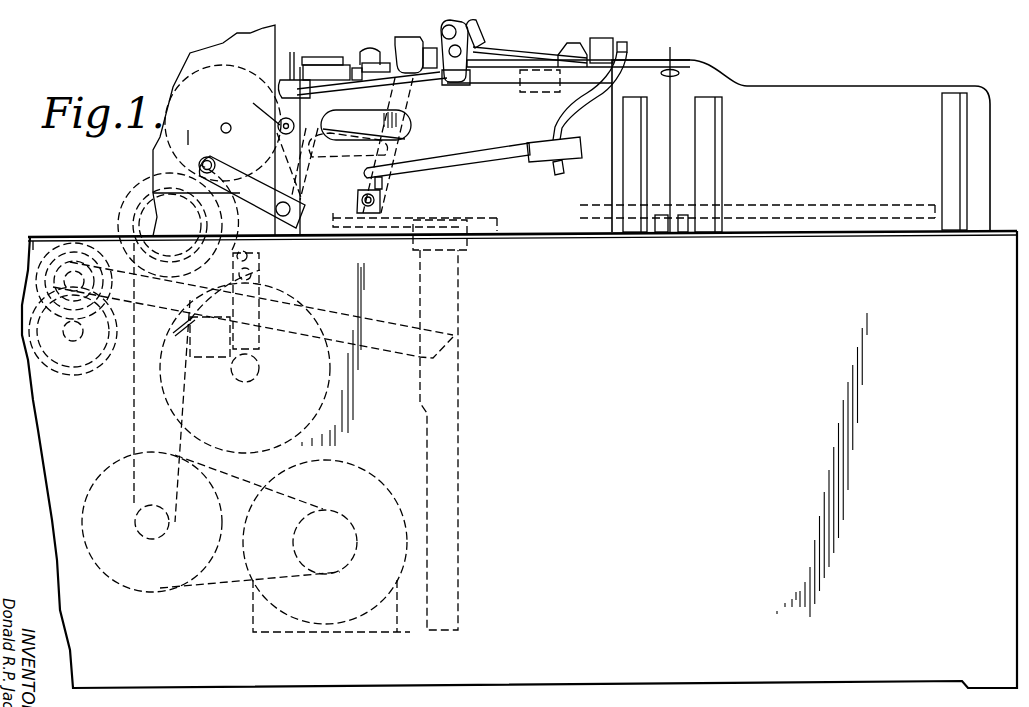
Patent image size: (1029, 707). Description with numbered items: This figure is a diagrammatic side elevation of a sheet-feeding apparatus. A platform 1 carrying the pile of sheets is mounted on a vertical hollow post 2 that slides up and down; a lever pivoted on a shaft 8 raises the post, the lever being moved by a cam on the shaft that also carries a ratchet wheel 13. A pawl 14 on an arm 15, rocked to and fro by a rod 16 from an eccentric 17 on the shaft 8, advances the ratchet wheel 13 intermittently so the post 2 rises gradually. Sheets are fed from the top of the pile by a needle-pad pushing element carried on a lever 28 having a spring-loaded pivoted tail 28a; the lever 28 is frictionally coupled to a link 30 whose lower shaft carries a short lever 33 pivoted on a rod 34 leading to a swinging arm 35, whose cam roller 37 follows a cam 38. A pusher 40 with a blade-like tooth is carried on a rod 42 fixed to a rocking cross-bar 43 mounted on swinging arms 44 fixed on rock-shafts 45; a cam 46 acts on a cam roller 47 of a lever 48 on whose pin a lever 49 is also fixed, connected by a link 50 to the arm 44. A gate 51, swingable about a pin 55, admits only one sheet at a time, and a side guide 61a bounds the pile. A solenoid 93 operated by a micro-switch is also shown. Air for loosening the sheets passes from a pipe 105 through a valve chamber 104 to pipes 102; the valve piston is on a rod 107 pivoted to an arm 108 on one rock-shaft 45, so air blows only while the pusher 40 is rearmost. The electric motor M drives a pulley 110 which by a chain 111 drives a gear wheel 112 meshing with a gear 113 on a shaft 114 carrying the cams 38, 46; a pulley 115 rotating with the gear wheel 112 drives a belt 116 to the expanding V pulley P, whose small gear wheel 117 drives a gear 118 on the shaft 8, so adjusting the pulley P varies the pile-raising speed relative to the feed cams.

The platform 1 is at (499, 236).
The vertical hollow post 2 is at (460, 410).
The shaft 8 is at (66, 226).
The ratchet wheel 13 is at (268, 450).
The pawl 14 is at (232, 270).
The arm 15 is at (258, 284).
The rod 16 is at (232, 233).
The eccentric 17 is at (73, 331).
The lever 28 is at (445, 45).
The pivoted tail 28a is at (484, 34).
The link 30 is at (395, 145).
The short lever 33 is at (456, 78).
The rod 34 is at (358, 86).
The swinging arm 35 is at (275, 160).
The cam roller 37 is at (301, 114).
The cam 38 is at (265, 98).
The pusher 40 is at (570, 43).
The rod 42 is at (505, 50).
The rocking cross-bar 43 is at (392, 45).
The swinging arms 44 is at (400, 126).
The rock-shafts 45 is at (361, 203).
The cam 46 is at (184, 128).
The cam roller 47 is at (199, 164).
The lever 48 is at (255, 202).
The lever 49 is at (308, 192).
The link 50 is at (348, 152).
The gate 51 is at (294, 68).
The pin 55 is at (310, 70).
The side guide 61a is at (637, 83).
The solenoid 93 is at (173, 333).
The pipes 102 is at (580, 97).
The chamber 104 is at (578, 159).
The pipe 105 is at (554, 168).
The rod 107 is at (486, 156).
The arm 108 is at (383, 184).
The pulley 110 is at (92, 562).
The chain 111 is at (131, 418).
The gear wheel 112 is at (137, 188).
The gear 113 is at (190, 72).
The shaft 114 is at (226, 123).
The pulley 115 is at (135, 207).
The belt 116 is at (105, 240).
The small gear wheel 117 is at (66, 334).
The gear 118 is at (33, 226).
The electric motor M is at (378, 475).
The expanding V pulley P is at (50, 384).